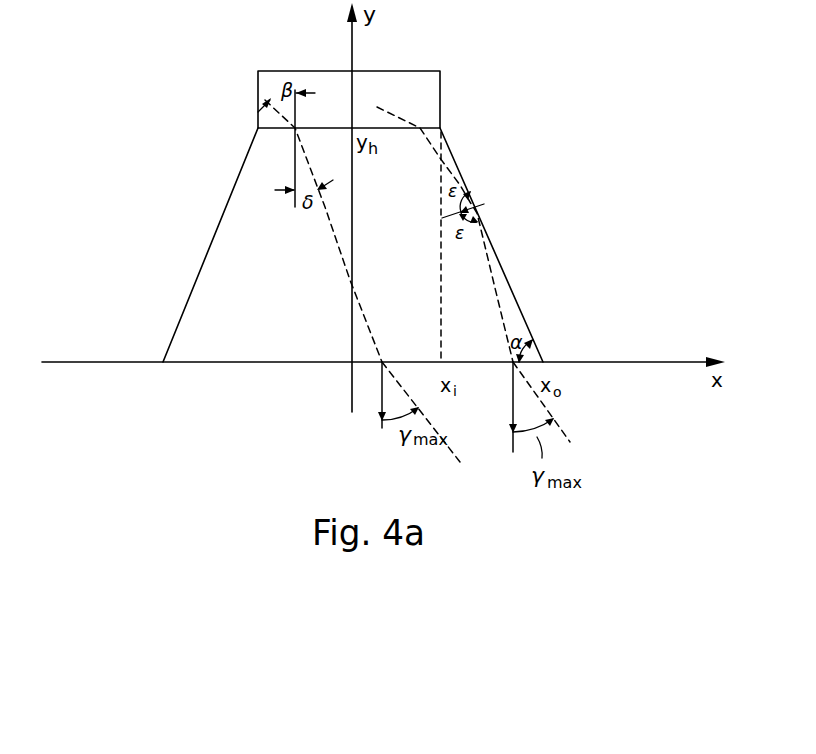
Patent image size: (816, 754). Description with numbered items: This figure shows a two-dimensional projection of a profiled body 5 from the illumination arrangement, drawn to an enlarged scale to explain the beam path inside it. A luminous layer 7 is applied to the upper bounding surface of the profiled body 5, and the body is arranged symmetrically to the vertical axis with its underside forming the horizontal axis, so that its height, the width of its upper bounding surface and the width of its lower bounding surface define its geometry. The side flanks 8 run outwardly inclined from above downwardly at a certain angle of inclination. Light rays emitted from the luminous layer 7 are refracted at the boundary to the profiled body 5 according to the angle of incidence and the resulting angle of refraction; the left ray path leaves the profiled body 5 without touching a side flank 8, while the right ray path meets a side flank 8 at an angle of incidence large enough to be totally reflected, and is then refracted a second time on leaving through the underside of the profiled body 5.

The profiled body 5 is at (218, 254).
The luminous layer 7 is at (433, 97).
The side flank 8 is at (520, 300).